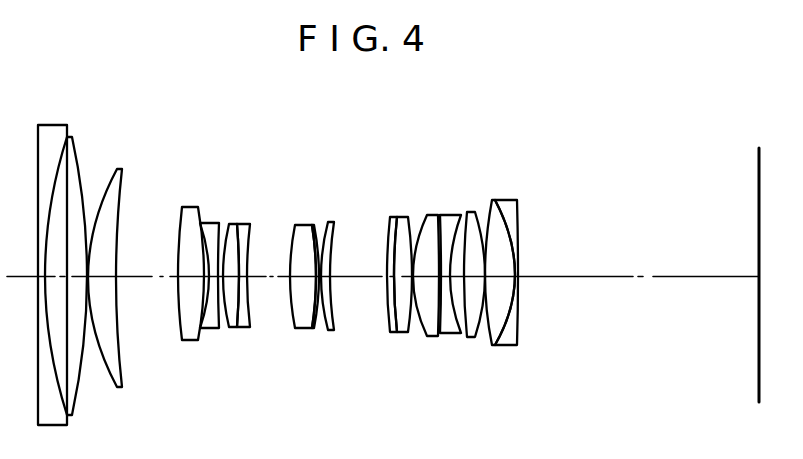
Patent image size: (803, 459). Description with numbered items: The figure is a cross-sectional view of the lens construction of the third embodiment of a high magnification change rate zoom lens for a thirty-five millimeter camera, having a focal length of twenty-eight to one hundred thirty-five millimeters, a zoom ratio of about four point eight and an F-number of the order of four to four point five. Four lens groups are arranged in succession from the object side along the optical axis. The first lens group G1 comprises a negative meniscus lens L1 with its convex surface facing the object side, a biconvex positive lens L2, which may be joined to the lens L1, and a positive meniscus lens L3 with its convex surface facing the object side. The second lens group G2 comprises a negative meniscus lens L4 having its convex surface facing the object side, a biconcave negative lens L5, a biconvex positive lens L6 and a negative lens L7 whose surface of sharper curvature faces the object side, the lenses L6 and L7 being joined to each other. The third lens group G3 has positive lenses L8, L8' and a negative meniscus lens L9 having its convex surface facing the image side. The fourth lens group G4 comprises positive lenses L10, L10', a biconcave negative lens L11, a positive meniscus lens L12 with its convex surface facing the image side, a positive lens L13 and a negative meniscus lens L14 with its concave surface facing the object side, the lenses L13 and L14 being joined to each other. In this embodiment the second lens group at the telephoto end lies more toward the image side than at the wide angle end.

The first lens group G1 is at (143, 83).
The second lens group G2 is at (270, 162).
The third lens group G3 is at (368, 162).
The fourth lens group G4 is at (593, 160).
The negative meniscus lens L1 is at (51, 130).
The biconvex positive lens L2 is at (70, 138).
The positive meniscus lens L3 is at (119, 168).
The negative meniscus lens L4 is at (190, 207).
The biconcave negative lens L5 is at (208, 223).
The biconvex positive lens L6 is at (228, 224).
The negative lens L7 is at (247, 223).
The positive lens L8 is at (297, 248).
The negative meniscus lens L9 is at (312, 224).
The positive lens L8' is at (341, 249).
The positive lens L10 is at (396, 250).
The positive lens L10' is at (431, 252).
The biconcave negative lens L11 is at (450, 214).
The positive meniscus lens L12 is at (473, 211).
The positive lens L13 is at (487, 224).
The negative meniscus lens L14 is at (517, 199).